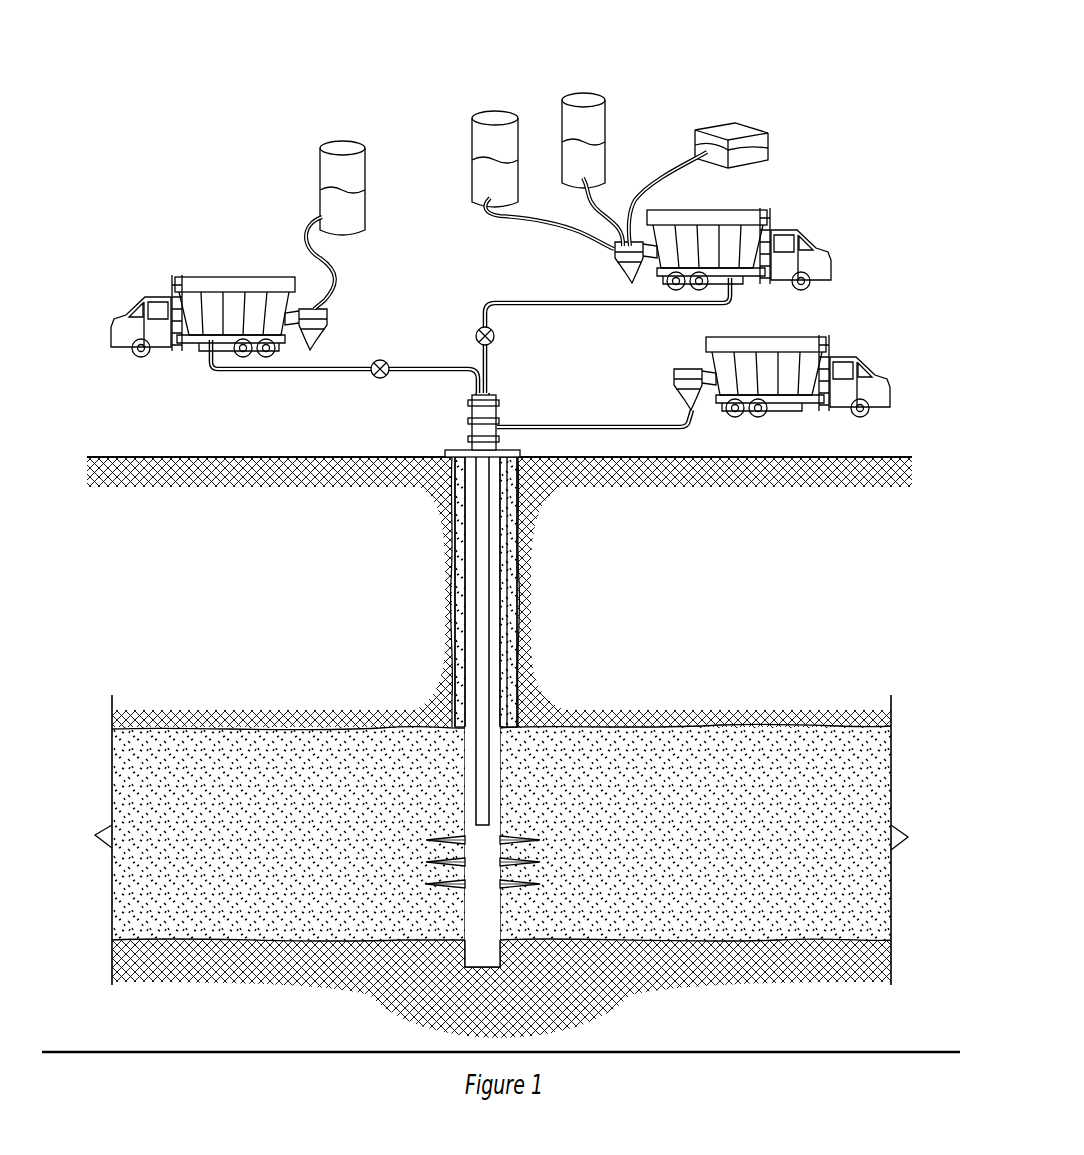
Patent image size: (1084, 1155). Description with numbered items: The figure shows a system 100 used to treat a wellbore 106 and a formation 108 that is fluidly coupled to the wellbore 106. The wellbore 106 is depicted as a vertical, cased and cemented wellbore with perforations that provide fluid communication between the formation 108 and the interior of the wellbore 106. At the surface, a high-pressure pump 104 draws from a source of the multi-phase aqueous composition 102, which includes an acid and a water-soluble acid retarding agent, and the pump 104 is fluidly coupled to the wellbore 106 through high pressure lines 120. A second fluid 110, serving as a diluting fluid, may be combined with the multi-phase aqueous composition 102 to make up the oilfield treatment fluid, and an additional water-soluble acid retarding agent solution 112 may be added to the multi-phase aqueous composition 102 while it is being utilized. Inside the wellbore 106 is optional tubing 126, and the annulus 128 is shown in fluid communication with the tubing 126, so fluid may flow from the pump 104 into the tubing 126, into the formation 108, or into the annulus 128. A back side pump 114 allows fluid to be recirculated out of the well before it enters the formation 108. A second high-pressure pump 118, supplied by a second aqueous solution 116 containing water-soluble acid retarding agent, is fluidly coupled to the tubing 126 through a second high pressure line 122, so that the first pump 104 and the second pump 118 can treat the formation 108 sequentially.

The system 100 is at (862, 70).
The multi-phase aqueous composition 102 is at (488, 116).
The high-pressure pump 104 is at (783, 232).
The wellbore 106 is at (445, 600).
The formation 108 is at (338, 877).
The second fluid 110 is at (582, 98).
The additional water-soluble acid retarding agent solution 112 is at (724, 124).
The back side pump 114 is at (845, 352).
The second aqueous solution 116 is at (340, 146).
The second high-pressure pump 118 is at (218, 281).
The high pressure lines 120 is at (534, 303).
The second high pressure line 122 is at (325, 370).
The tubing 126 is at (498, 415).
The annulus 128 is at (500, 656).